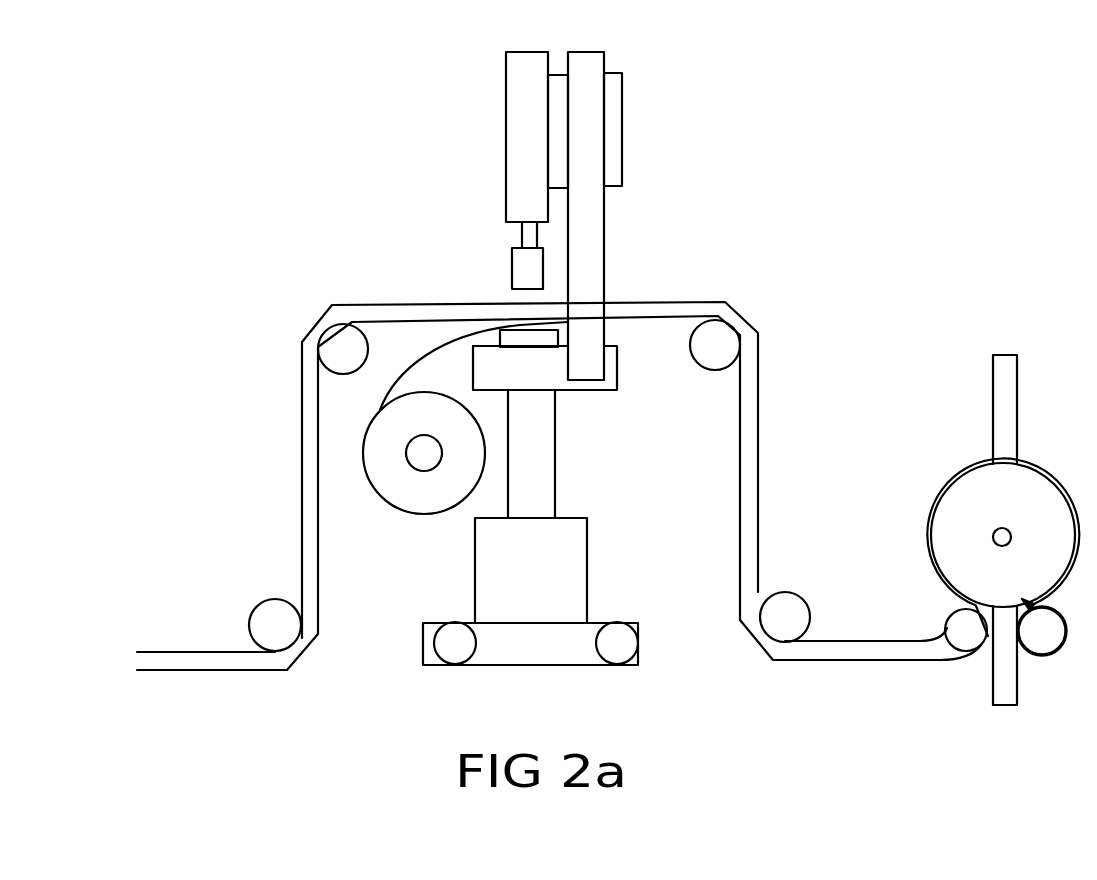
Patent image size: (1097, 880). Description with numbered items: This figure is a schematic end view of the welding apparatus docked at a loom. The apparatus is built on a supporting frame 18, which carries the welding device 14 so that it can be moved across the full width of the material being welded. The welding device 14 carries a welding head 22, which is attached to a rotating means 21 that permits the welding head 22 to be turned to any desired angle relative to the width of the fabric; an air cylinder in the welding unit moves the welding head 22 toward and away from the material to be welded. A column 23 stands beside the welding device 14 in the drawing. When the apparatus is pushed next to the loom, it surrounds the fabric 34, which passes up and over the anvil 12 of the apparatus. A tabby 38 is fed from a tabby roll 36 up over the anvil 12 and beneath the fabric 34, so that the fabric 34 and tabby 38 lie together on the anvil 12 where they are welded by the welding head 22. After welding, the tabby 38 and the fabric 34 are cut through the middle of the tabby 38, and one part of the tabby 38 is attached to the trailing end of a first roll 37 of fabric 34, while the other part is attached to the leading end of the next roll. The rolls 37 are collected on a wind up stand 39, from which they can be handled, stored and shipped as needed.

The anvil 12 is at (540, 336).
The welding device 14 is at (522, 83).
The supporting frame 18 is at (538, 472).
The rotating means 21 is at (528, 237).
The welding head 22 is at (510, 262).
The support column 23 is at (557, 92).
The fabric 34 is at (310, 452).
The tabby roll 36 is at (420, 458).
The first roll of fabric 37 is at (967, 548).
The tabby 38 is at (408, 378).
The wind up stand 39 is at (1005, 368).